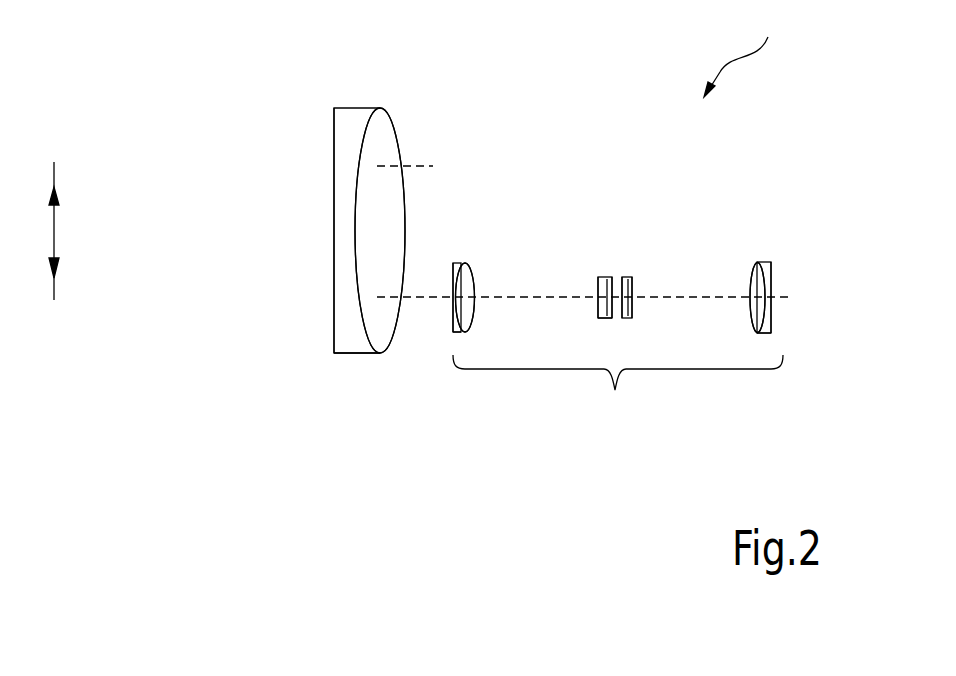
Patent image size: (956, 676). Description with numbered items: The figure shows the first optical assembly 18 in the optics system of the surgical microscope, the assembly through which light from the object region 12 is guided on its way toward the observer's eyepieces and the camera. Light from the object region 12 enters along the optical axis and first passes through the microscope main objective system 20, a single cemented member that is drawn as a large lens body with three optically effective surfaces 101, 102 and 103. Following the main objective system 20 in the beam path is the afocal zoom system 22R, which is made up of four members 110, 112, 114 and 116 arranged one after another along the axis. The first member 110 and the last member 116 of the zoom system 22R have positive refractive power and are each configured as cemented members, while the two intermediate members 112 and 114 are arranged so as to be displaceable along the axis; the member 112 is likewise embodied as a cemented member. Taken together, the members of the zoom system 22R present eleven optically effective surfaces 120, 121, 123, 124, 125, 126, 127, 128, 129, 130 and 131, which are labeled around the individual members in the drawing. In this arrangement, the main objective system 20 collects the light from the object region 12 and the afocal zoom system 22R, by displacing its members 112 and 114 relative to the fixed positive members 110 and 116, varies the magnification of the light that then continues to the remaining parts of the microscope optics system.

The object region 12 is at (57, 212).
The first optical assembly 18 is at (743, 53).
The microscope main objective system 20 is at (377, 230).
The afocal zoom system 22R is at (615, 392).
The optically effective surface 101 is at (331, 310).
The optically effective surface 102 is at (357, 329).
The optically effective surface 103 is at (408, 210).
The member of the zoom system 110 is at (479, 303).
The member of the zoom system 112 is at (596, 268).
The member of the zoom system 114 is at (652, 283).
The member of the zoom system 116 is at (763, 282).
The optically effective surface 120 is at (448, 284).
The optically effective surface 121 is at (450, 328).
The optically effective surface 123 is at (477, 287).
The optically effective surface 124 is at (595, 306).
The optically effective surface 125 is at (596, 290).
The optically effective surface 126 is at (613, 282).
The optically effective surface 127 is at (618, 312).
The optically effective surface 128 is at (635, 292).
The optically effective surface 129 is at (748, 316).
The optically effective surface 130 is at (753, 275).
The optically effective surface 131 is at (776, 292).